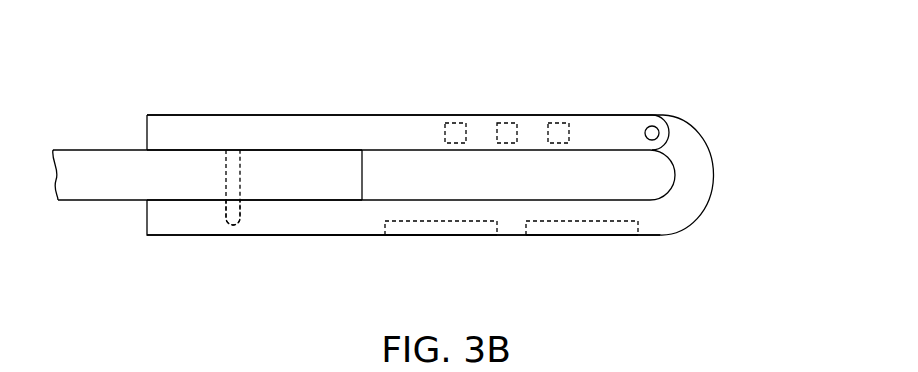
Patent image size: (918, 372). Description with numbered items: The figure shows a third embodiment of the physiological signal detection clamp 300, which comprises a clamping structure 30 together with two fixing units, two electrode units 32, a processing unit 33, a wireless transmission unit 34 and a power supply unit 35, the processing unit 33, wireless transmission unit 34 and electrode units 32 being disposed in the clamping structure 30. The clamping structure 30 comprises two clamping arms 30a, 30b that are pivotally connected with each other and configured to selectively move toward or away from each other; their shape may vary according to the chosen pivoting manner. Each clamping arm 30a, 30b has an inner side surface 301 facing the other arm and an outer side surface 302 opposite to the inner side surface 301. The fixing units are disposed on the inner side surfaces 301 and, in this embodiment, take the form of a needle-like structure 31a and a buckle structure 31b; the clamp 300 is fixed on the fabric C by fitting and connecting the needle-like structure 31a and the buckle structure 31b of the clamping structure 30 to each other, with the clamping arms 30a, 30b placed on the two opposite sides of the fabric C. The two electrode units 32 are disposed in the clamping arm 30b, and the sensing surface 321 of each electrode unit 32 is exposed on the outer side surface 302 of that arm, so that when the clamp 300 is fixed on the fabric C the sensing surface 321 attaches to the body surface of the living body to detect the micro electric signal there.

The physiological signal detection clamp 300 is at (310, 90).
The clamping structure 30 is at (795, 85).
The clamping arm 30a is at (613, 124).
The clamping arm 30b is at (683, 198).
The inner side surface 301 is at (398, 198).
The outer side surface 302 is at (322, 237).
The fabric C is at (94, 166).
The needle-like structure 31a is at (233, 150).
The buckle structure 31b is at (235, 226).
The electrode unit 32 is at (436, 237).
The sensing surface 321 is at (480, 237).
The processing unit 33 is at (457, 123).
The wireless transmission unit 34 is at (508, 123).
The power supply unit 35 is at (560, 123).